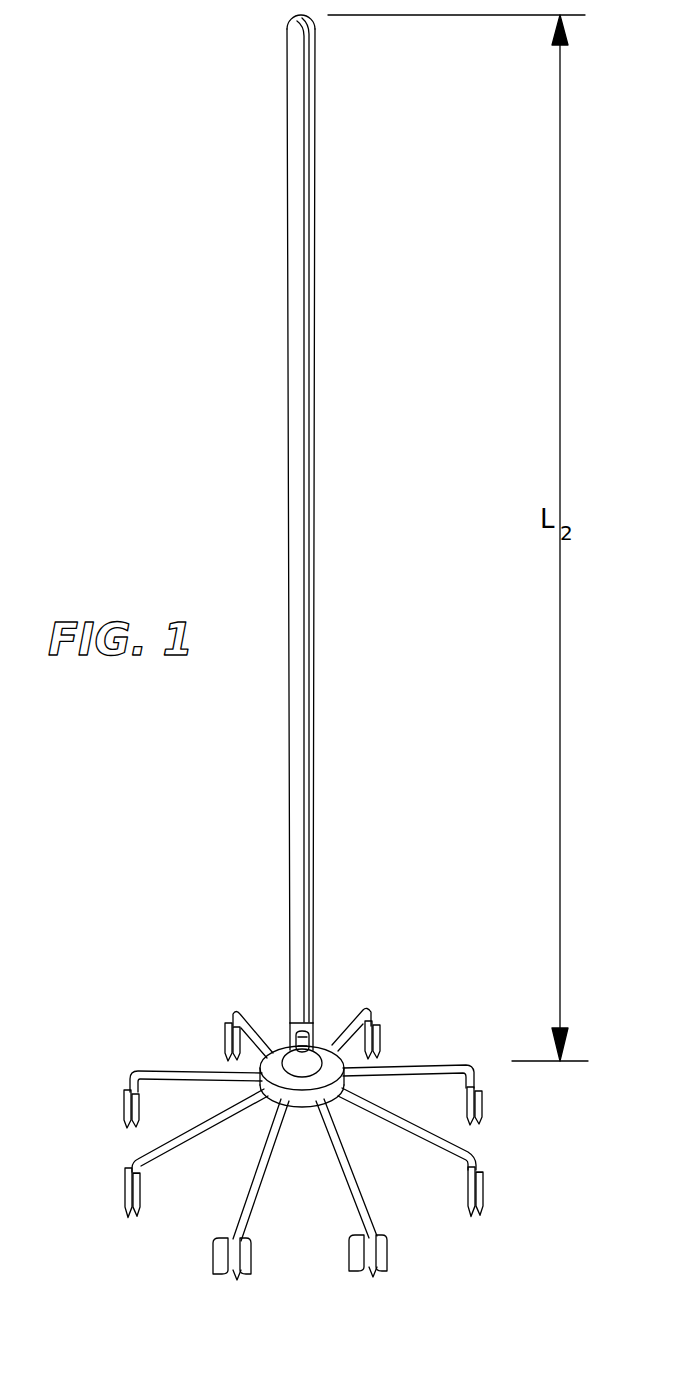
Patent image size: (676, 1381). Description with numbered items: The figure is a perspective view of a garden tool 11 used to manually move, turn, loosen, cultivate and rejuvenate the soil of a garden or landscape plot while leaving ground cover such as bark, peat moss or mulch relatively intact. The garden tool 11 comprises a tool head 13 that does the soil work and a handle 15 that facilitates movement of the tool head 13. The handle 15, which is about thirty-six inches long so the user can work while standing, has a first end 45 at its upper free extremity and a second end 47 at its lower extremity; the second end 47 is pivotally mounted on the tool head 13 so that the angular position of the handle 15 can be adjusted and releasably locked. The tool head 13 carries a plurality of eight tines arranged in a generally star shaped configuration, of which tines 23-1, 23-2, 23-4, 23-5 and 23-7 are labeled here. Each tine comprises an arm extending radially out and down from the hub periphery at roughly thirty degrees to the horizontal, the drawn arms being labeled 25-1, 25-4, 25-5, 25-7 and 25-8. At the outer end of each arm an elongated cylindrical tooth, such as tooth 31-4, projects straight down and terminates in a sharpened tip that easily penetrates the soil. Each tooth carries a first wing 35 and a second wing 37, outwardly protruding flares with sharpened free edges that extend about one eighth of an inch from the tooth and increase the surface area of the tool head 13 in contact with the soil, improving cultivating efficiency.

The garden tool 11 is at (170, 1236).
The tool head 13 is at (240, 1009).
The handle 15 is at (256, 519).
The first end 45 is at (298, 62).
The second end 47 is at (304, 1003).
The tine 23-1 is at (474, 1153).
The tine 23-2 is at (434, 1065).
The tine 23-4 is at (243, 1008).
The tine 23-5 is at (89, 1092).
The tine 23-7 is at (256, 1220).
The arm 25-1 is at (456, 1152).
The arm 25-4 is at (222, 992).
The arm 25-5 is at (151, 1071).
The arm 25-7 is at (276, 1198).
The arm 25-8 is at (409, 1188).
The tooth 31-4 is at (380, 1226).
The first wing 35 is at (160, 1153).
The second wing 37 is at (143, 1198).